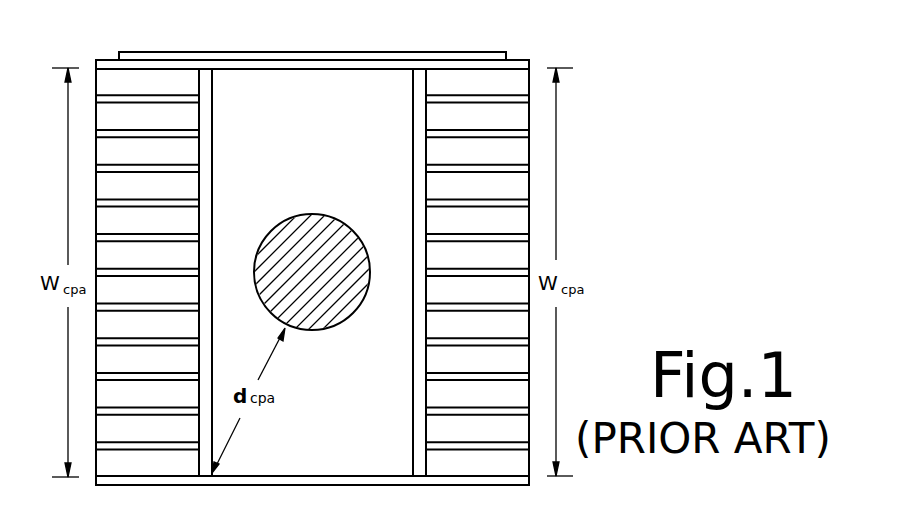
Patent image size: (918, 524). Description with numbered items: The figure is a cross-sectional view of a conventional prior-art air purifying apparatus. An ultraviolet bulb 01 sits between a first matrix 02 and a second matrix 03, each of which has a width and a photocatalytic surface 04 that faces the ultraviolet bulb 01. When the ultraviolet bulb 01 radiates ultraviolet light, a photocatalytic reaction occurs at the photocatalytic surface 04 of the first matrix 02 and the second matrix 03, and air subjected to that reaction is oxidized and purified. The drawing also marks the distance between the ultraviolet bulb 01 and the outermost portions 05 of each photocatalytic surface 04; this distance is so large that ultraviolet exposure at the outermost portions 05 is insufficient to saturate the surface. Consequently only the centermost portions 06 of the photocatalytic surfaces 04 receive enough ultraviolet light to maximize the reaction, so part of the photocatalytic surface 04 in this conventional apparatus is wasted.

The ultraviolet bulb 01 is at (318, 226).
The first matrix 02 is at (137, 117).
The second matrix 03 is at (490, 115).
The photocatalytic surface 04 is at (212, 230).
The outermost portions 05 is at (212, 82).
The centermost portions 06 is at (212, 305).